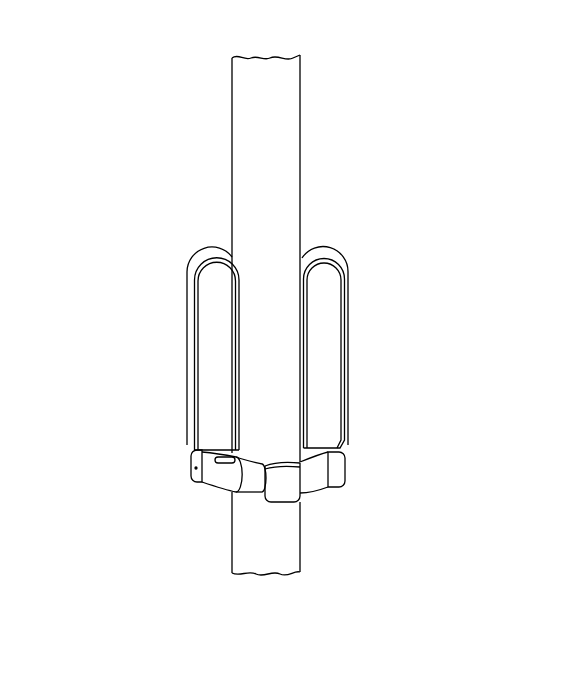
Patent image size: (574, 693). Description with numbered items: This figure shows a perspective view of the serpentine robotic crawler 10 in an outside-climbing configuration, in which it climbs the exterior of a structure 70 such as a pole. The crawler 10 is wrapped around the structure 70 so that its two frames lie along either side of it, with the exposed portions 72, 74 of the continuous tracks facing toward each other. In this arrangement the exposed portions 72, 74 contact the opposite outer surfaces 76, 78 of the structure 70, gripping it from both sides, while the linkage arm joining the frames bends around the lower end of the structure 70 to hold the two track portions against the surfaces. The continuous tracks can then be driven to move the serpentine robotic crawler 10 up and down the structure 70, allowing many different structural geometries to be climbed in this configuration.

The serpentine robotic crawler 10 is at (140, 348).
The structure 70 is at (269, 291).
The exposed portion of continuous track 72 is at (233, 260).
The exposed portion of continuous track 74 is at (302, 257).
The outer surface of structure 76 is at (232, 100).
The outer surface of structure 78 is at (302, 90).